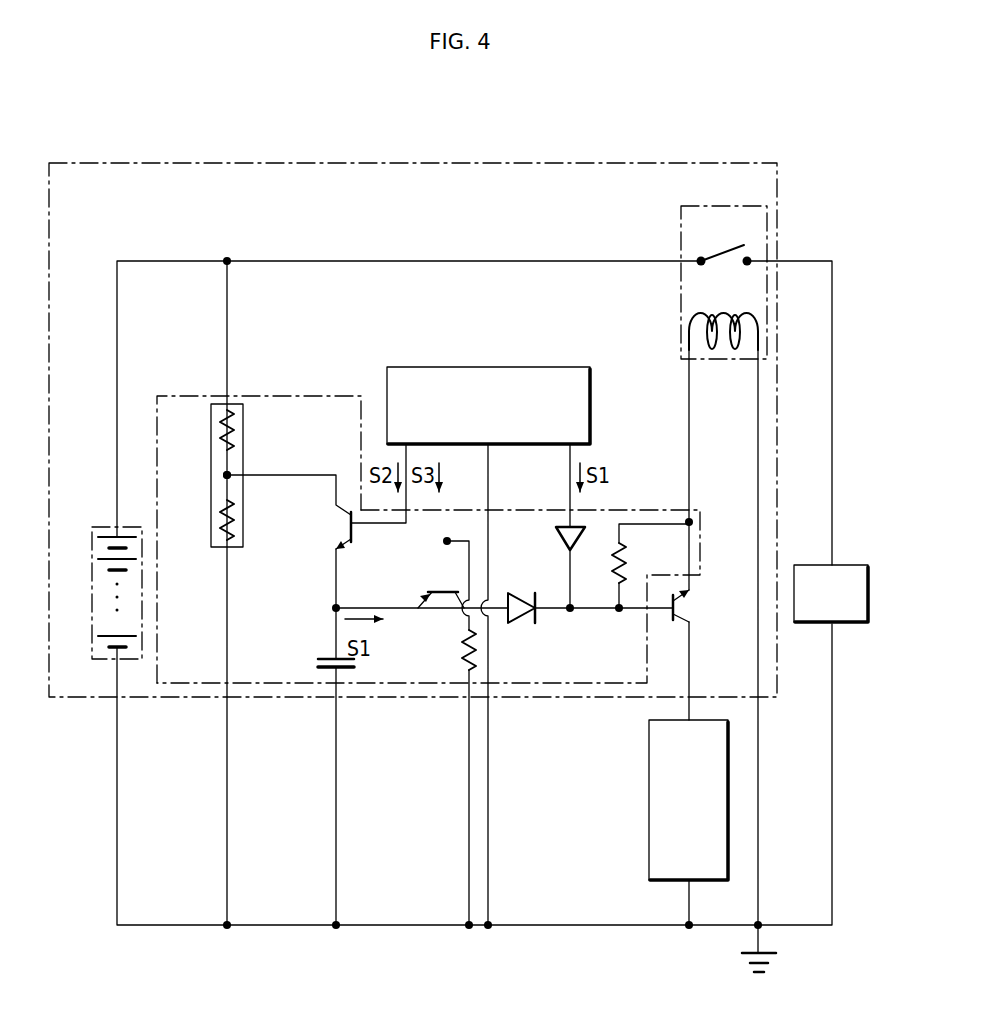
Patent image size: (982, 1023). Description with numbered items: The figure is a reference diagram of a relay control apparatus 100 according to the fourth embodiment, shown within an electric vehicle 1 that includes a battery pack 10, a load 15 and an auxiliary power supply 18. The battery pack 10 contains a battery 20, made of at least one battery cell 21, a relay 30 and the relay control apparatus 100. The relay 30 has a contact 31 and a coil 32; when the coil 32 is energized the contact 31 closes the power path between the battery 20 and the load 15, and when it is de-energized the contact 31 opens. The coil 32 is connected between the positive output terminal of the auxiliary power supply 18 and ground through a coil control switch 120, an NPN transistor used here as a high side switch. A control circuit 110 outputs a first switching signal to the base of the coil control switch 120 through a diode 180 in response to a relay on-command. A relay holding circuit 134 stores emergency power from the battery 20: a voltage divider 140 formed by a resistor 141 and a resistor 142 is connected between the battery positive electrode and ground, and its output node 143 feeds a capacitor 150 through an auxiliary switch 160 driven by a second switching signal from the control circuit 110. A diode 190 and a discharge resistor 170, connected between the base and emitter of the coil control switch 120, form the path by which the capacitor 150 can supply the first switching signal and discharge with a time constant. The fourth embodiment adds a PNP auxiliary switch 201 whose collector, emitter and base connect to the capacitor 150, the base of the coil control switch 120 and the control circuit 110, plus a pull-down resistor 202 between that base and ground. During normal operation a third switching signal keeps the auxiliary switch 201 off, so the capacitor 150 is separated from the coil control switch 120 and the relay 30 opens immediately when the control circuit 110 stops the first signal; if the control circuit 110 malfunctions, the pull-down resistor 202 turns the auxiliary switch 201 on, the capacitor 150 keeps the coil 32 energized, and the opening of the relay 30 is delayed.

The electric vehicle 1 is at (186, 107).
The battery pack 10 is at (266, 163).
The load 15 is at (856, 565).
The auxiliary power supply 18 is at (649, 761).
The battery 20 is at (100, 525).
The battery cell 21 is at (96, 538).
The relay 30 is at (746, 205).
The contact 31 is at (722, 252).
The coil 32 is at (730, 314).
The relay control apparatus 100 is at (514, 325).
The control circuit 110 is at (566, 366).
The coil control switch 120 is at (691, 604).
The relay holding circuit 134 is at (316, 396).
The voltage divider 140 is at (232, 475).
The resistor 141 is at (211, 422).
The resistor 142 is at (211, 515).
The output node 143 is at (220, 477).
The capacitor 150 is at (318, 660).
The auxiliary switch 160 is at (344, 520).
The discharge resistor 170 is at (624, 559).
The diode 180 is at (556, 530).
The diode 190 is at (513, 598).
The auxiliary switch 201 is at (432, 590).
The pull-down resistor 202 is at (466, 644).